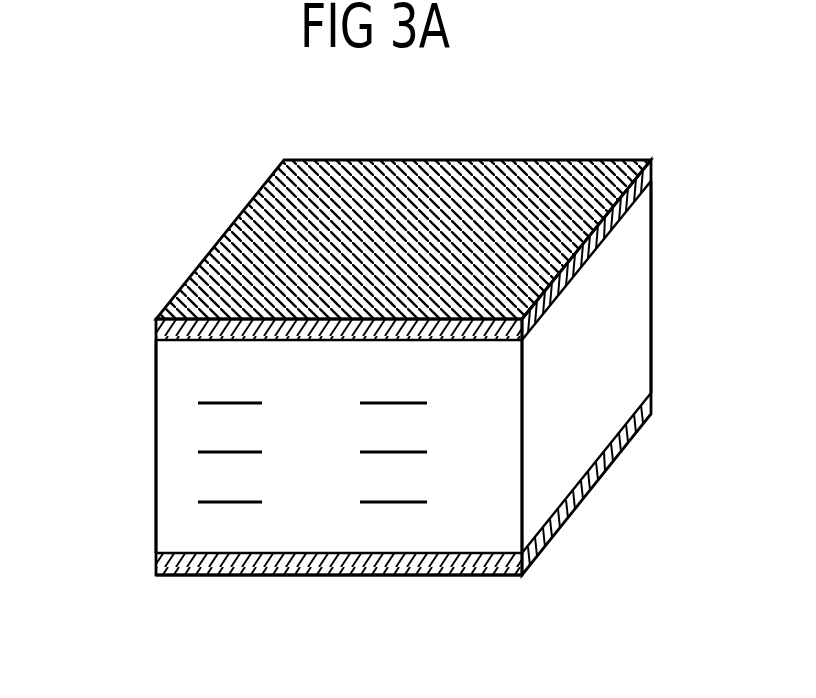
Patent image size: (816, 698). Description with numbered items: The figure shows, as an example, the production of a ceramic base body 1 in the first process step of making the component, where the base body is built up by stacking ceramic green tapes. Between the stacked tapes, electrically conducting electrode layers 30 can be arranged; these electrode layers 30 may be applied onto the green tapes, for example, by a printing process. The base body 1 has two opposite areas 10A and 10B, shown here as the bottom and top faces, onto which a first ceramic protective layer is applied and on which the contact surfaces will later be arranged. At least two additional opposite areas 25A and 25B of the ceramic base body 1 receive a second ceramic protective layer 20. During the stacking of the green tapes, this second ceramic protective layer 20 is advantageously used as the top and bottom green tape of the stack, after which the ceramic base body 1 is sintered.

The ceramic base body 1 is at (638, 303).
The opposite area of the base body 10A is at (337, 578).
The opposite area of the base body 10B is at (396, 188).
The second ceramic protective layer 20 is at (466, 176).
The additional opposite area 25A is at (585, 497).
The additional opposite area 25B is at (155, 472).
The electrically conducting electrode layers 30 is at (243, 450).